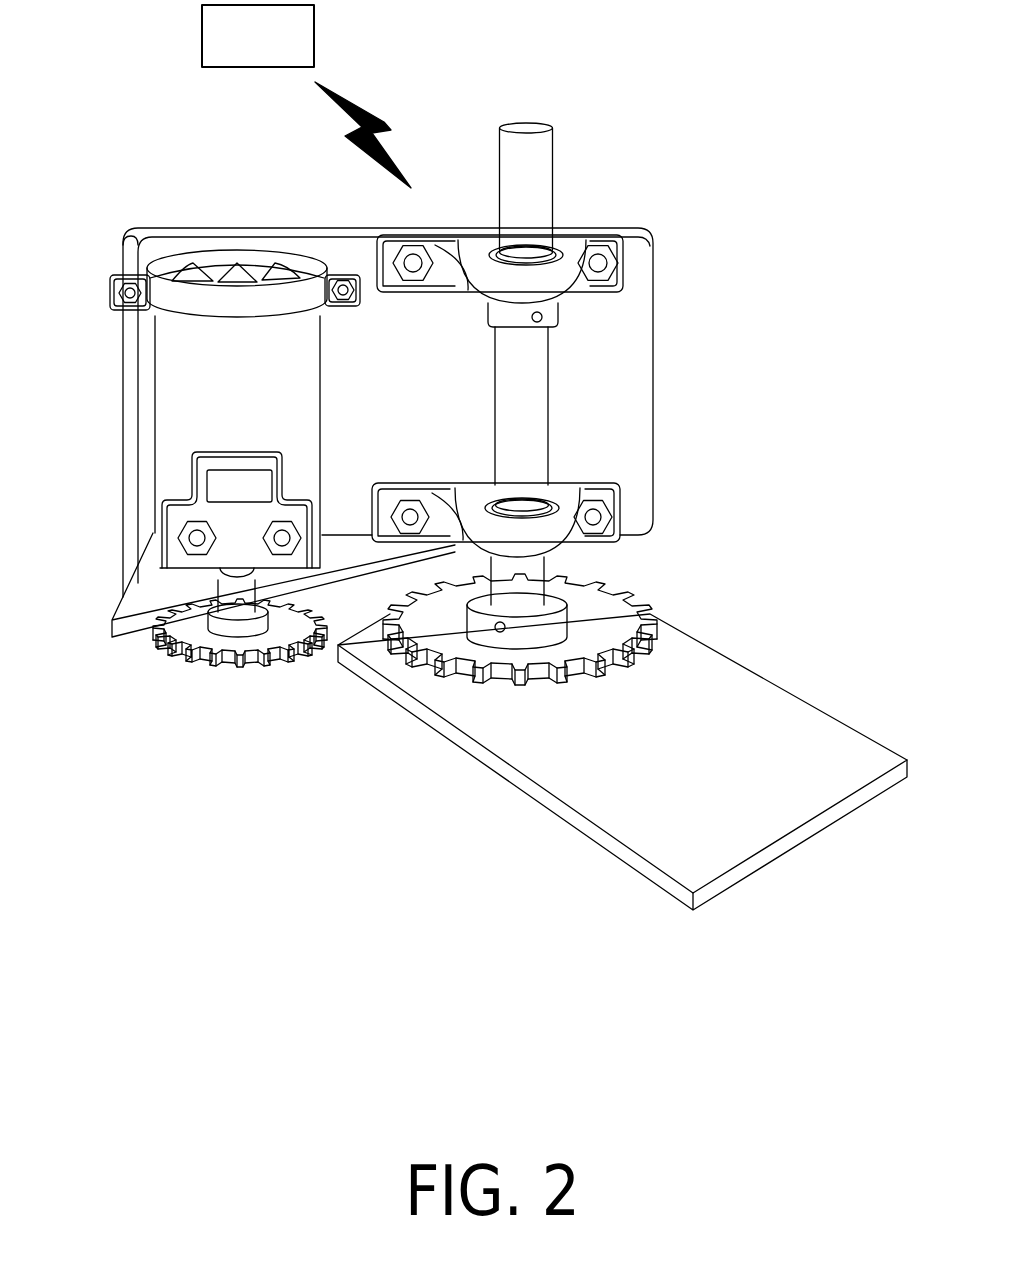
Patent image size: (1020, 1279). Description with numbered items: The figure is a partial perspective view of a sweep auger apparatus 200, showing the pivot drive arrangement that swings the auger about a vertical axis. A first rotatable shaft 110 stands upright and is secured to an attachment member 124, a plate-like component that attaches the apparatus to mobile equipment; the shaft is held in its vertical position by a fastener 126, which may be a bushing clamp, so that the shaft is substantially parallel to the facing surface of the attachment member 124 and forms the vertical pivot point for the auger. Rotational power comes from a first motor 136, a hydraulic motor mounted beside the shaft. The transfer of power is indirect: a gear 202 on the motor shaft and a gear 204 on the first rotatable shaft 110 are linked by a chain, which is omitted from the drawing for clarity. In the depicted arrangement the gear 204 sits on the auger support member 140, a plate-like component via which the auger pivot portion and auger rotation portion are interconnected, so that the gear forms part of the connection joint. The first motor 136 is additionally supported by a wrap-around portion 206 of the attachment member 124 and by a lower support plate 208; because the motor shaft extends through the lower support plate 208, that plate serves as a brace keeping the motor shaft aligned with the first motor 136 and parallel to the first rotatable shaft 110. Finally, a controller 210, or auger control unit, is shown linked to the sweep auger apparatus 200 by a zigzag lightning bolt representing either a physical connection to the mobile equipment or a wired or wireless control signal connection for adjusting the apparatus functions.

The sweep auger apparatus 200 is at (796, 156).
The controller 210 is at (277, 47).
The first rotatable shaft 110 is at (552, 173).
The fastener 126 is at (578, 238).
The attachment member 124 is at (653, 477).
The wrap-around portion 206 is at (130, 243).
The first motor 136 is at (258, 250).
The gear 204 is at (630, 600).
The auger support member 140 is at (742, 663).
The lower support plate 208 is at (140, 630).
The gear 202 is at (243, 667).